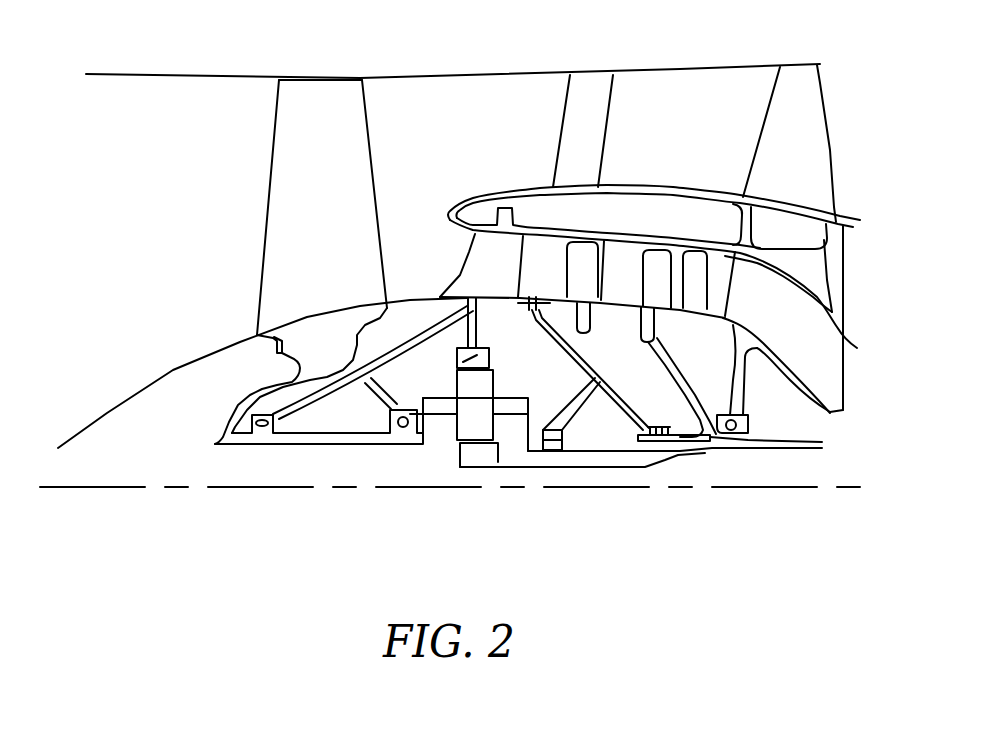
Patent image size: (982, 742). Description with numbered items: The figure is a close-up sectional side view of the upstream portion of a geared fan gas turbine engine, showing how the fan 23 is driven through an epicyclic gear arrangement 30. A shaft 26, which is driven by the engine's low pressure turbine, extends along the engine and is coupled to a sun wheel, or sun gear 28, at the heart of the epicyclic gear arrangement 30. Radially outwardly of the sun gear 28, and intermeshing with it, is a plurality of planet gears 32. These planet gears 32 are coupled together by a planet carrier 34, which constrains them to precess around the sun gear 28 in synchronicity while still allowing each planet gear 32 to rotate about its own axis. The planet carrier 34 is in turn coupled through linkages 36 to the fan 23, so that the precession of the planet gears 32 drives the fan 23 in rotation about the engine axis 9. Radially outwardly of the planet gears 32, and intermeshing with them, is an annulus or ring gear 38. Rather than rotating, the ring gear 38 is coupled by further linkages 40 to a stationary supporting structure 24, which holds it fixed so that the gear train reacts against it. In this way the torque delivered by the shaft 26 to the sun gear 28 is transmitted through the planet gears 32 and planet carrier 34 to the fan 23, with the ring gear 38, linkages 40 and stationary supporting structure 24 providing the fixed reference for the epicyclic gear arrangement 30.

The engine axis 9 is at (450, 536).
The fan 23 is at (278, 188).
The stationary supporting structure 24 is at (532, 239).
The shaft 26 is at (641, 438).
The sun gear 28 is at (485, 498).
The epicyclic gear arrangement 30 is at (469, 473).
The planet gears 32 is at (470, 474).
The planet carrier 34 is at (582, 432).
The linkages 36 is at (344, 428).
The ring gear 38 is at (258, 376).
The linkages 40 is at (304, 321).